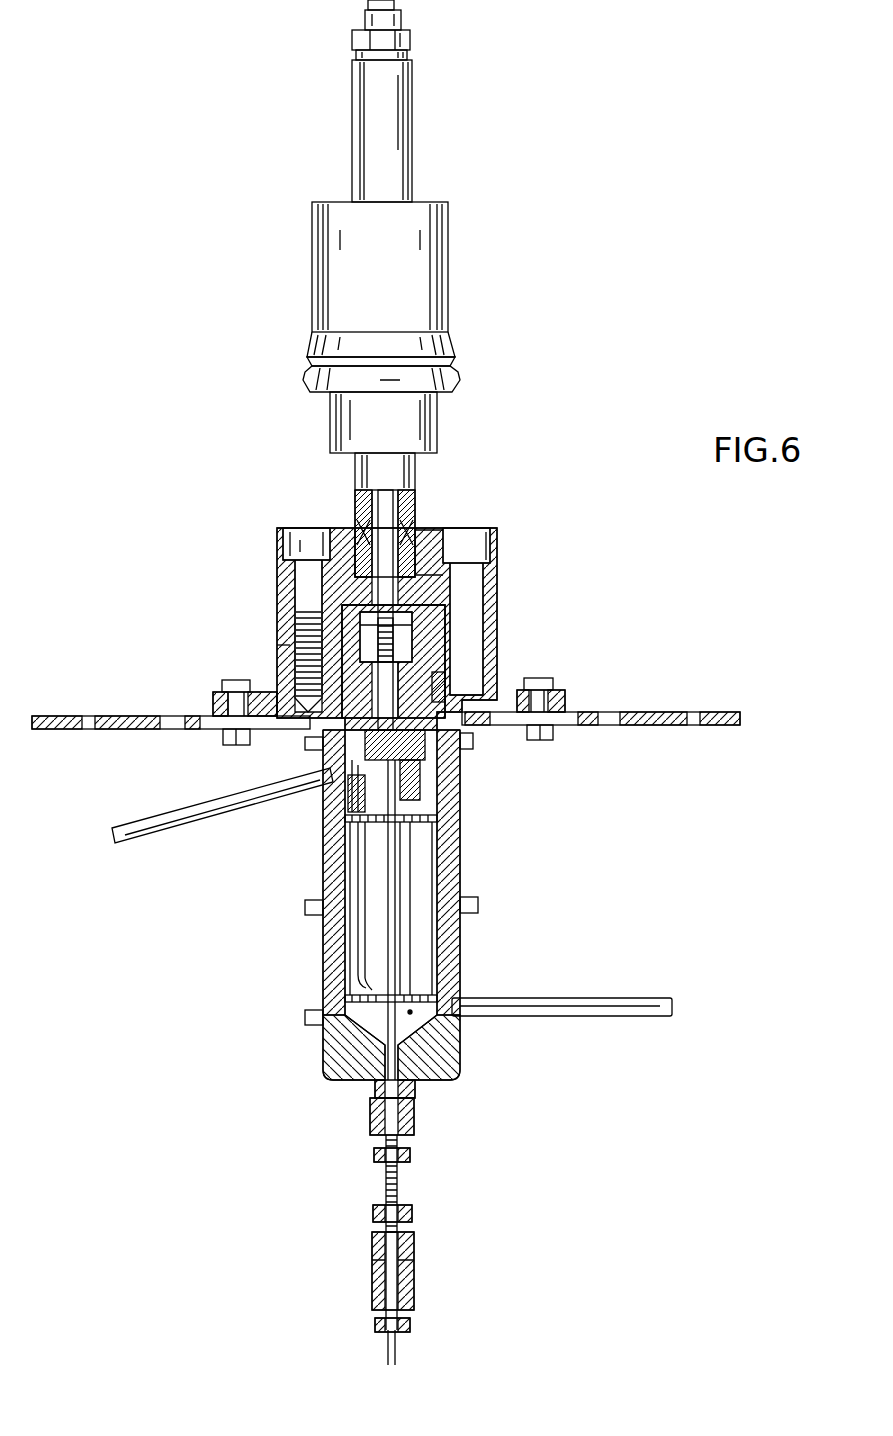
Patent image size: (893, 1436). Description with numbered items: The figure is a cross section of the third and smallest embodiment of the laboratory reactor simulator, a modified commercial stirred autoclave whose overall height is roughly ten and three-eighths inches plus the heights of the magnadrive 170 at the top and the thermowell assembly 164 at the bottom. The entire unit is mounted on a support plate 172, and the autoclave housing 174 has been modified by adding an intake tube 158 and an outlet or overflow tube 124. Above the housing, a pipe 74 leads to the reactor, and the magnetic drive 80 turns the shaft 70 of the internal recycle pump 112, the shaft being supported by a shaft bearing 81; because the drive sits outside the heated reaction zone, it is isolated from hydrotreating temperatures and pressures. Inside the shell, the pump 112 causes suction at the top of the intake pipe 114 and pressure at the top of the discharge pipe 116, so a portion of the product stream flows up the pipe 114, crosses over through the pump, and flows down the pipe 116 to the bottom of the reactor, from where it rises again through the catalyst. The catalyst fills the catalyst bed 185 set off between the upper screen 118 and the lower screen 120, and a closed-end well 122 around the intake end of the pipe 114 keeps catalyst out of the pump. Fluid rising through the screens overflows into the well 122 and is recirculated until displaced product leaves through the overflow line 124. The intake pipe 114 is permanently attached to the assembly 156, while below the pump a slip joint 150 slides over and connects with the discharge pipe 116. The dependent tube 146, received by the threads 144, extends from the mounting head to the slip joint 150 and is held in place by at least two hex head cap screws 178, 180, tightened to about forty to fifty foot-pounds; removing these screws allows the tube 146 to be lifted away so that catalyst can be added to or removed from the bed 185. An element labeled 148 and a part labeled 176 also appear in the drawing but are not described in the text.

The shaft 70 is at (415, 500).
The pipe 74 is at (413, 512).
The magnetic drive 80 is at (313, 204).
The shaft bearing 81 is at (405, 555).
The internal recycle pump 112 is at (460, 735).
The intake pipe 114 is at (322, 858).
The discharge pipe 116 is at (440, 878).
The upper screen 118 is at (450, 832).
The lower screen 120 is at (460, 966).
The well 122 is at (322, 820).
The overflow product outlet line 124 is at (153, 840).
The threaded portion 144 is at (450, 628).
The dependent tube 146 is at (445, 680).
The spring 148 is at (322, 805).
The slip joint 150 is at (228, 0).
The assembly 156 is at (455, 755).
The intake tube 158 is at (625, 998).
The thermowell assembly 164 is at (338, 1368).
The magnadrive 170 is at (502, 516).
The support plate 172 is at (585, 712).
The autoclave housing 174 is at (445, 852).
The upper body block 176 is at (497, 592).
The hex head cap screw 178 is at (305, 528).
The hex head cap screw 180 is at (463, 528).
The catalyst bed 185 is at (322, 930).